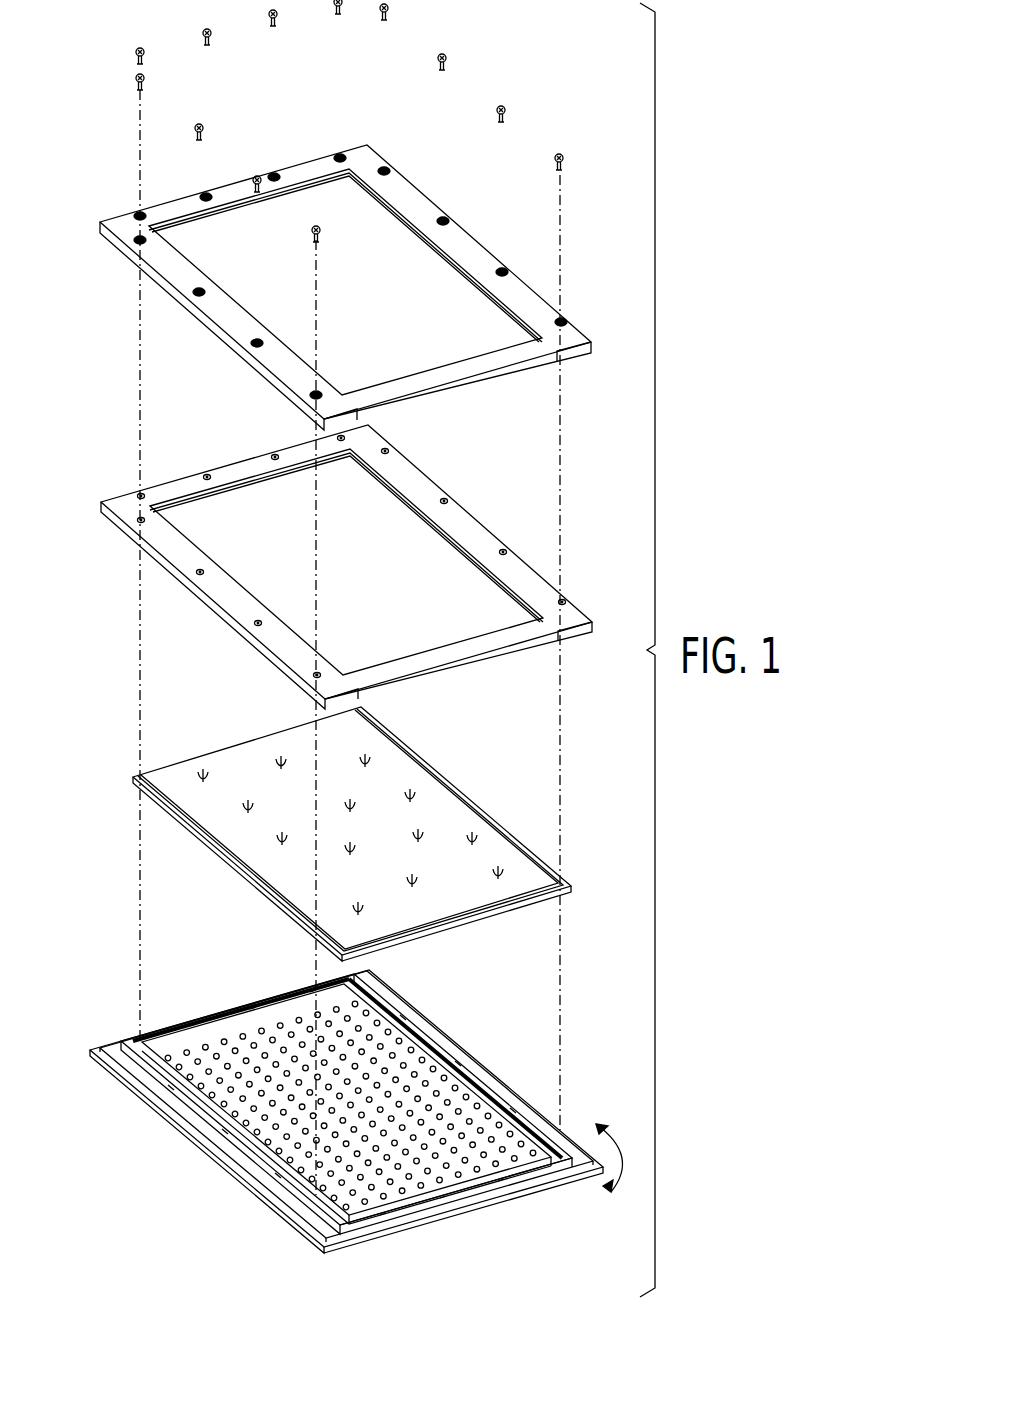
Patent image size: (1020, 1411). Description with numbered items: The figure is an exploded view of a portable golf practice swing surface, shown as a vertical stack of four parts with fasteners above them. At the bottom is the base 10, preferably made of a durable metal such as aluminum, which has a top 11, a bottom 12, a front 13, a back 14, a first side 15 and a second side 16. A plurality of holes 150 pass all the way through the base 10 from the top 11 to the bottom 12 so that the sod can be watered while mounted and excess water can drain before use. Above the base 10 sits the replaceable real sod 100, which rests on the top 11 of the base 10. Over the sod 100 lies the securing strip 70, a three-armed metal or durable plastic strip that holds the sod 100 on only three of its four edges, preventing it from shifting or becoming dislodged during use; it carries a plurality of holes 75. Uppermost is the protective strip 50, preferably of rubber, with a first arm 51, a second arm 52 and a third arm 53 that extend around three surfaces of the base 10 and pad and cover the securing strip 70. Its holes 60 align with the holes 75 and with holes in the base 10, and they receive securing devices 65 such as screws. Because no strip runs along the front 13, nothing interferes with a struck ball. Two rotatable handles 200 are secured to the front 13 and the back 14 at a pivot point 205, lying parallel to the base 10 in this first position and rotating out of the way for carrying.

The base 10 is at (351, 1128).
The top 11 is at (483, 1182).
The bottom 12 is at (457, 1212).
The front 13 is at (472, 1200).
The back 14 is at (230, 1010).
The first side 15 is at (513, 1103).
The second side 16 is at (357, 1230).
The protective strip 50 is at (365, 279).
The first arm 51 is at (473, 254).
The second arm 52 is at (248, 188).
The third arm 53 is at (178, 272).
The holes 60 is at (445, 218).
The securing devices 65 is at (446, 68).
The securing strip 70 is at (368, 567).
The holes 75 is at (501, 548).
The sod 100 is at (490, 852).
The holes 150 is at (300, 1175).
The rotatable handle 200 is at (367, 1124).
The pivot point 205 is at (507, 1190).